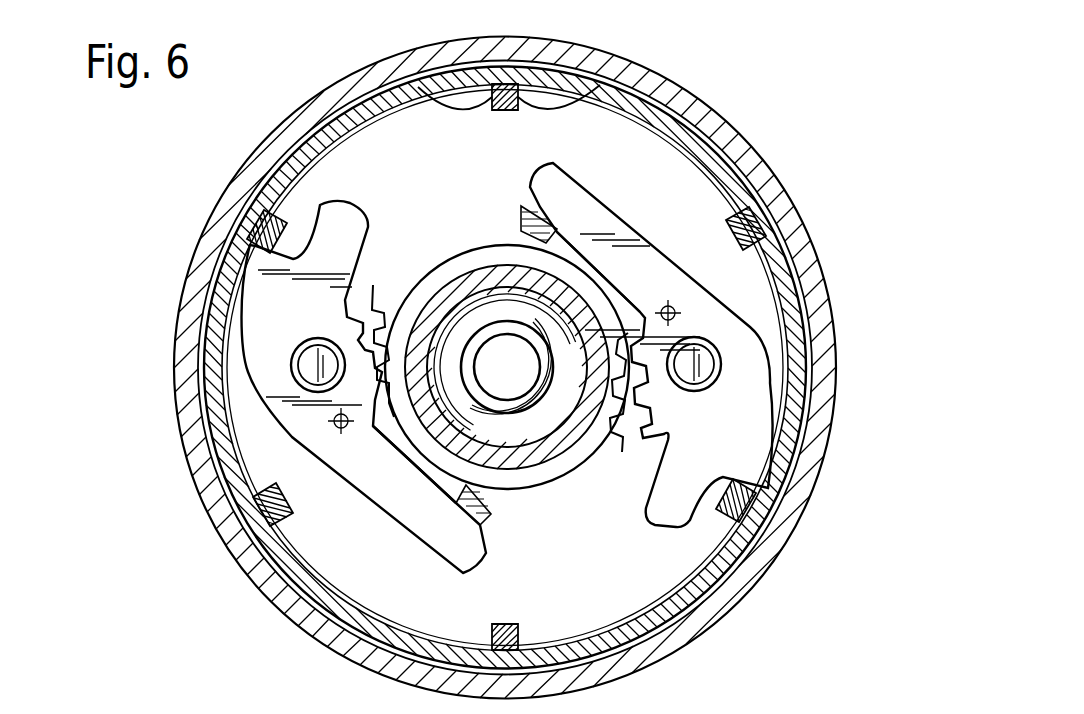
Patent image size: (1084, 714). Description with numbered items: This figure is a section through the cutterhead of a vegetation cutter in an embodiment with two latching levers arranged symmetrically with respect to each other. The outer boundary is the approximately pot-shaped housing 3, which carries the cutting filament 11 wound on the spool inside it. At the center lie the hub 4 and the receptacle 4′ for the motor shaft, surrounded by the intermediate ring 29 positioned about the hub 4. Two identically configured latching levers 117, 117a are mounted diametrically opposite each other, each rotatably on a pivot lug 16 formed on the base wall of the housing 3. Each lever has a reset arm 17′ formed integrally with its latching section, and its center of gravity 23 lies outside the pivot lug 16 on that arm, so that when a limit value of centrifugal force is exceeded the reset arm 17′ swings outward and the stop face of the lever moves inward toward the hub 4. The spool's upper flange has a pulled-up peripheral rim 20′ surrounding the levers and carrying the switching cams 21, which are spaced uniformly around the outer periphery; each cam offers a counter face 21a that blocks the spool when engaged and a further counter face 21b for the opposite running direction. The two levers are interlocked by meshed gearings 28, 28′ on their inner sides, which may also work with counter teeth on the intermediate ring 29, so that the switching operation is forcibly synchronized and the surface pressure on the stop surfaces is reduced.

The housing 3 is at (726, 102).
The cutting filament 11 is at (505, 334).
The switching cam 21 is at (506, 92).
The counter face 21a is at (430, 88).
The counter face 21b is at (584, 80).
The peripheral rim 20′ is at (283, 173).
The latching lever 117 is at (252, 324).
The latching lever 117a is at (769, 410).
The reset arm 17′ is at (437, 525).
The pivot lug 16 is at (291, 364).
The center of gravity 23 is at (337, 426).
The meshed gearing 28 is at (369, 309).
The meshed gearing 28′ is at (640, 433).
The intermediate ring 29 is at (469, 262).
The hub 4 is at (553, 440).
The receptacle for the motor shaft 4′ is at (513, 402).